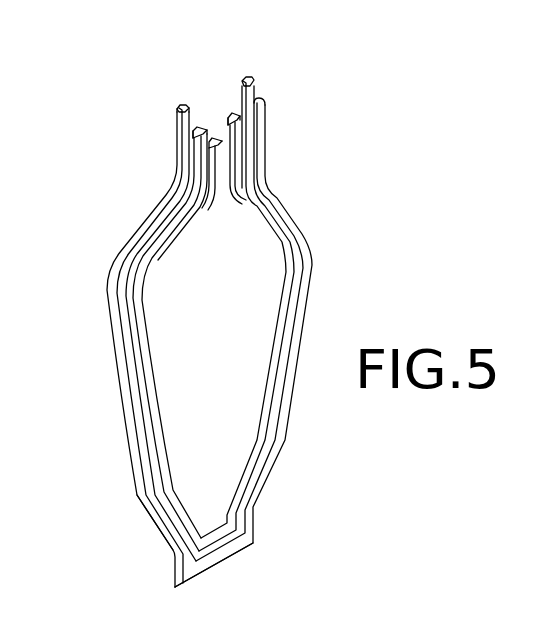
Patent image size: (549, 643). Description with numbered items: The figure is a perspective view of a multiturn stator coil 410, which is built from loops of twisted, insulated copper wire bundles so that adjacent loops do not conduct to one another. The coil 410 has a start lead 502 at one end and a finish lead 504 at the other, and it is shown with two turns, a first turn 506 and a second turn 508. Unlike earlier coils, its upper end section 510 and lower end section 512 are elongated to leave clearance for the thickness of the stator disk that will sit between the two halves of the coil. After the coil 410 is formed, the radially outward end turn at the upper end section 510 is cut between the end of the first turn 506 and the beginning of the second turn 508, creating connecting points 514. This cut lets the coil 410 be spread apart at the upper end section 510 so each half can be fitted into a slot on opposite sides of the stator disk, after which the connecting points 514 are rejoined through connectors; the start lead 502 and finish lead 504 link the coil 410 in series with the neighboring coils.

The start lead 502 is at (168, 134).
The finish lead 504 is at (264, 77).
The first turn 506 is at (105, 354).
The second turn 508 is at (152, 356).
The upper end section 510 is at (211, 92).
The lower end section 512 is at (242, 562).
The connecting points 514 is at (231, 138).
The coil 410 is at (122, 444).